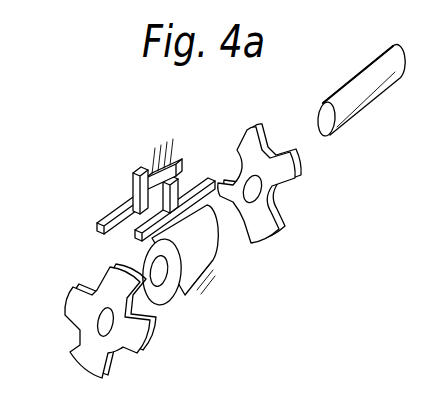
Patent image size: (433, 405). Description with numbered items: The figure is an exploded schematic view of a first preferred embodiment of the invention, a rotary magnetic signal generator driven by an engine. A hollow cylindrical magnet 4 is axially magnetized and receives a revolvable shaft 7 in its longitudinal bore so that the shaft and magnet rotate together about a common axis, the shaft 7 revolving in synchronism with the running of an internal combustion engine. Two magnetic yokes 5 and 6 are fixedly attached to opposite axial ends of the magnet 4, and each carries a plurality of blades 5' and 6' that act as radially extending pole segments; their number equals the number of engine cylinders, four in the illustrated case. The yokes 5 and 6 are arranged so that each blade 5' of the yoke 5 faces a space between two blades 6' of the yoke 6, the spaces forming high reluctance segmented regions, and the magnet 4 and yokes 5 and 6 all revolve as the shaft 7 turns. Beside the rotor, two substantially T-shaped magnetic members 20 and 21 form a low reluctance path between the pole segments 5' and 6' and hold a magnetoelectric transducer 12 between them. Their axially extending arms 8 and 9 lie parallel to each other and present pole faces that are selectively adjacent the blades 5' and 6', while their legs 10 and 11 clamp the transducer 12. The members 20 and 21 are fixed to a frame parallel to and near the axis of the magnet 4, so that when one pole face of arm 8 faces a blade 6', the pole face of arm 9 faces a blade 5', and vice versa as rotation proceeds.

The hollow cylindrical magnet 4 is at (203, 269).
The magnetic yoke 5 is at (110, 327).
The blades 5' is at (113, 319).
The magnetic yoke 6 is at (272, 185).
The blades 6' is at (282, 186).
The revolvable shaft 7 is at (376, 84).
The axially extending arm 8 is at (196, 180).
The axially extending arm 9 is at (123, 203).
The leg 10 is at (180, 176).
The leg 11 is at (132, 180).
The magnetoelectric transducer 12 is at (153, 168).
The T-shaped magnetic member 20 is at (141, 180).
The T-shaped magnetic member 21 is at (100, 177).